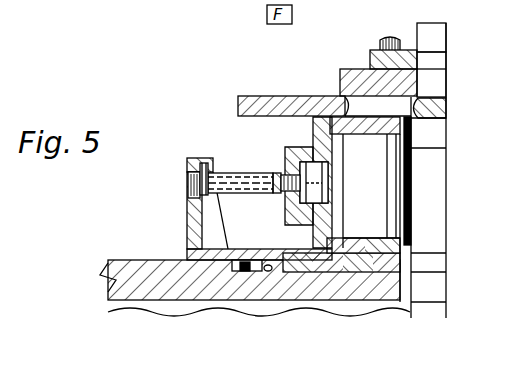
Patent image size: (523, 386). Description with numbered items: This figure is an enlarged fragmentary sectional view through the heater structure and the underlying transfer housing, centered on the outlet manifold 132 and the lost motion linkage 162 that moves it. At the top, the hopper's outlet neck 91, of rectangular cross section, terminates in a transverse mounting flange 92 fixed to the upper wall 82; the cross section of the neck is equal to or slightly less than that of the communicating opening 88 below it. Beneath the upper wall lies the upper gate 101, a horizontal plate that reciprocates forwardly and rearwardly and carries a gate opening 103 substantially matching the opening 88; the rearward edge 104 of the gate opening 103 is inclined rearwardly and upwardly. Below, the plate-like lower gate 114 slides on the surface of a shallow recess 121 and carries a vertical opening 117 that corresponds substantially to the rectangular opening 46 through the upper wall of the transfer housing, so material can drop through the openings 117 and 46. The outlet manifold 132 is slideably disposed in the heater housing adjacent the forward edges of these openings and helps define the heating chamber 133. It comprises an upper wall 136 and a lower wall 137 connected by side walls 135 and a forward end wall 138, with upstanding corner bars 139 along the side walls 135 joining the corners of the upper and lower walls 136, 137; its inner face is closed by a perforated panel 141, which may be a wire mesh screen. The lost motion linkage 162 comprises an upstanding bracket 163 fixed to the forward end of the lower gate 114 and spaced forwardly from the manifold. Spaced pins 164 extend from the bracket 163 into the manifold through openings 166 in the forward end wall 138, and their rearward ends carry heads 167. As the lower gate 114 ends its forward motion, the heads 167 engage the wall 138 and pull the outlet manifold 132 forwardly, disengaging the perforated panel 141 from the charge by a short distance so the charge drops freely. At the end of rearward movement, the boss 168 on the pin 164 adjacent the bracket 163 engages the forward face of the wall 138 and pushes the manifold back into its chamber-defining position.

The rectangular opening 46 is at (400, 290).
The upper wall 82 is at (342, 74).
The communicating opening 88 is at (418, 80).
The outlet neck 91 is at (430, 45).
The mounting flange 92 is at (375, 60).
The upper gate 101 is at (245, 105).
The gate opening 103 is at (348, 96).
The rearward edge 104 is at (422, 100).
The lower gate 114 is at (307, 262).
The vertical opening 117 is at (400, 265).
The recess 121 is at (277, 268).
The outlet manifold 132 is at (420, 168).
The heating chamber 133 is at (442, 202).
The side walls 135 is at (370, 230).
The upper wall 136 is at (431, 130).
The lower wall 137 is at (397, 248).
The forward end wall 138 is at (318, 233).
The corner bars 139 is at (413, 134).
The perforated panel 141 is at (405, 188).
The lost motion linkage 162 is at (176, 132).
The bracket 163 is at (187, 216).
The pins 164 is at (240, 175).
The openings 166 is at (277, 173).
The heads 167 is at (310, 186).
The boss 168 is at (208, 158).